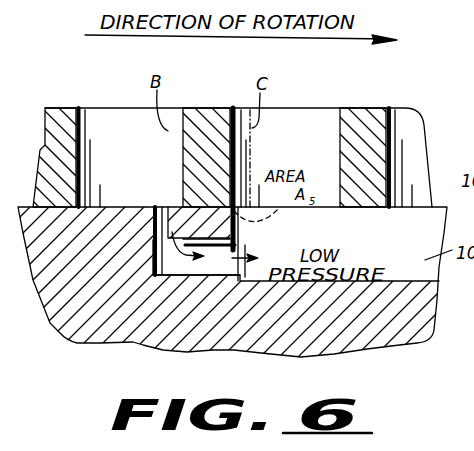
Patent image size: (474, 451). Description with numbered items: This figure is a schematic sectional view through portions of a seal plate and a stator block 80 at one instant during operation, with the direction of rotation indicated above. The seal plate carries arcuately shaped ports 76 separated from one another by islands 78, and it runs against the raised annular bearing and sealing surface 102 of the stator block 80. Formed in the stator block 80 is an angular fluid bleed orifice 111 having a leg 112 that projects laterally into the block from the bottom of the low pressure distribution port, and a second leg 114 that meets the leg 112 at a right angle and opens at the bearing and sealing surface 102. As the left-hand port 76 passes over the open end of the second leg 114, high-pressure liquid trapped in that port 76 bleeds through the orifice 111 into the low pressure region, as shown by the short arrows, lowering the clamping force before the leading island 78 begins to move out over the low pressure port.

The port 76 is at (102, 115).
The island 78 is at (203, 130).
The stator block 80 is at (390, 347).
The bearing and sealing surface 102 is at (24, 200).
The angular fluid bleed orifice 111 is at (157, 273).
The leg 112 is at (217, 273).
The second leg 114 is at (141, 277).